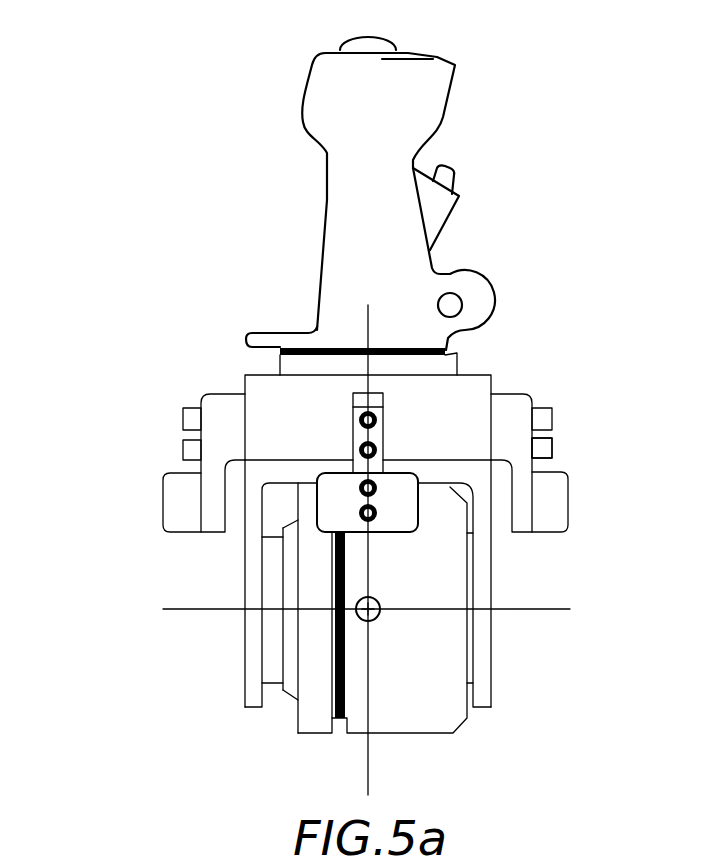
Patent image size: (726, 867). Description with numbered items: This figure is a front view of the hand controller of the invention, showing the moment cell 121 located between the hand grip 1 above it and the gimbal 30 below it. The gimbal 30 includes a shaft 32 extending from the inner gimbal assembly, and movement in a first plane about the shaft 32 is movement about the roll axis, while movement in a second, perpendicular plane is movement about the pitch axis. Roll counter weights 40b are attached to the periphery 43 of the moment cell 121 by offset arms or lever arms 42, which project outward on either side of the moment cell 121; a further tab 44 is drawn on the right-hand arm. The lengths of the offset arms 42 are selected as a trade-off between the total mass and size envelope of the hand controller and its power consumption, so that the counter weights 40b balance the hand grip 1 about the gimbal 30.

The hand grip 1 is at (444, 118).
The moment cell 121 is at (470, 374).
The periphery 43 is at (493, 380).
The offset arms 42 is at (205, 396).
The tab 44 is at (553, 448).
The roll counter weights 40b is at (165, 507).
The gimbal 30 is at (492, 572).
The shaft 32 is at (378, 621).